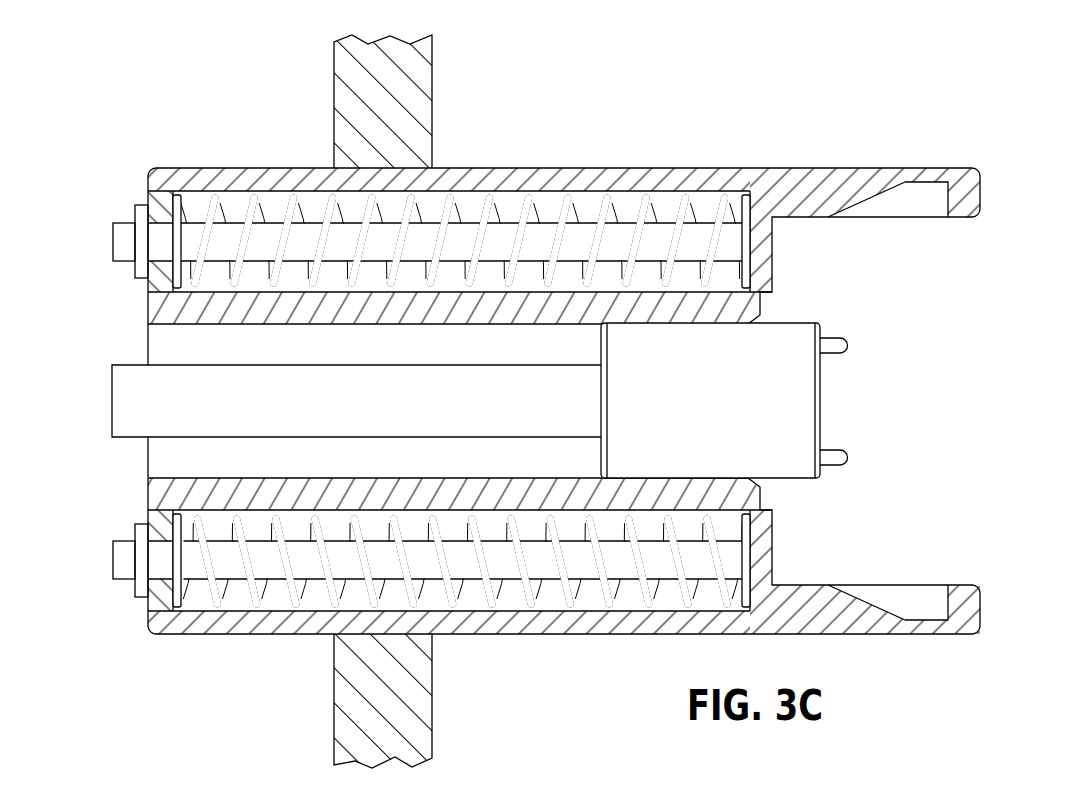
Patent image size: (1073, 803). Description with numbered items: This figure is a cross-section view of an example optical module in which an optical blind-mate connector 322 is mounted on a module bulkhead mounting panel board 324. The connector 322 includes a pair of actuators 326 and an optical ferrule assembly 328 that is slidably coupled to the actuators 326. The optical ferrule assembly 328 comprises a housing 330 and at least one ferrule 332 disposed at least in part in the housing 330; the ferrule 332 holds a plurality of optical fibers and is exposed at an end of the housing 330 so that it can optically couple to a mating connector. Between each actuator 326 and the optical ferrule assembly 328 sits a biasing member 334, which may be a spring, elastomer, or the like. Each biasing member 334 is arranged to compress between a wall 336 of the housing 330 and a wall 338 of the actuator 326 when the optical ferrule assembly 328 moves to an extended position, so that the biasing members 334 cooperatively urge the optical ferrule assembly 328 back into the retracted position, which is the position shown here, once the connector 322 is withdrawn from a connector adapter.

The optical blind-mate connector 322 is at (254, 114).
The module bulkhead mounting panel board 324 is at (432, 87).
The actuator 326 is at (982, 193).
The optical ferrule assembly 328 is at (460, 395).
The housing 330 is at (148, 463).
The ferrule 332 is at (822, 398).
The biasing member 334 is at (582, 215).
The wall of the housing 336 is at (148, 302).
The wall of the actuator 338 is at (772, 250).